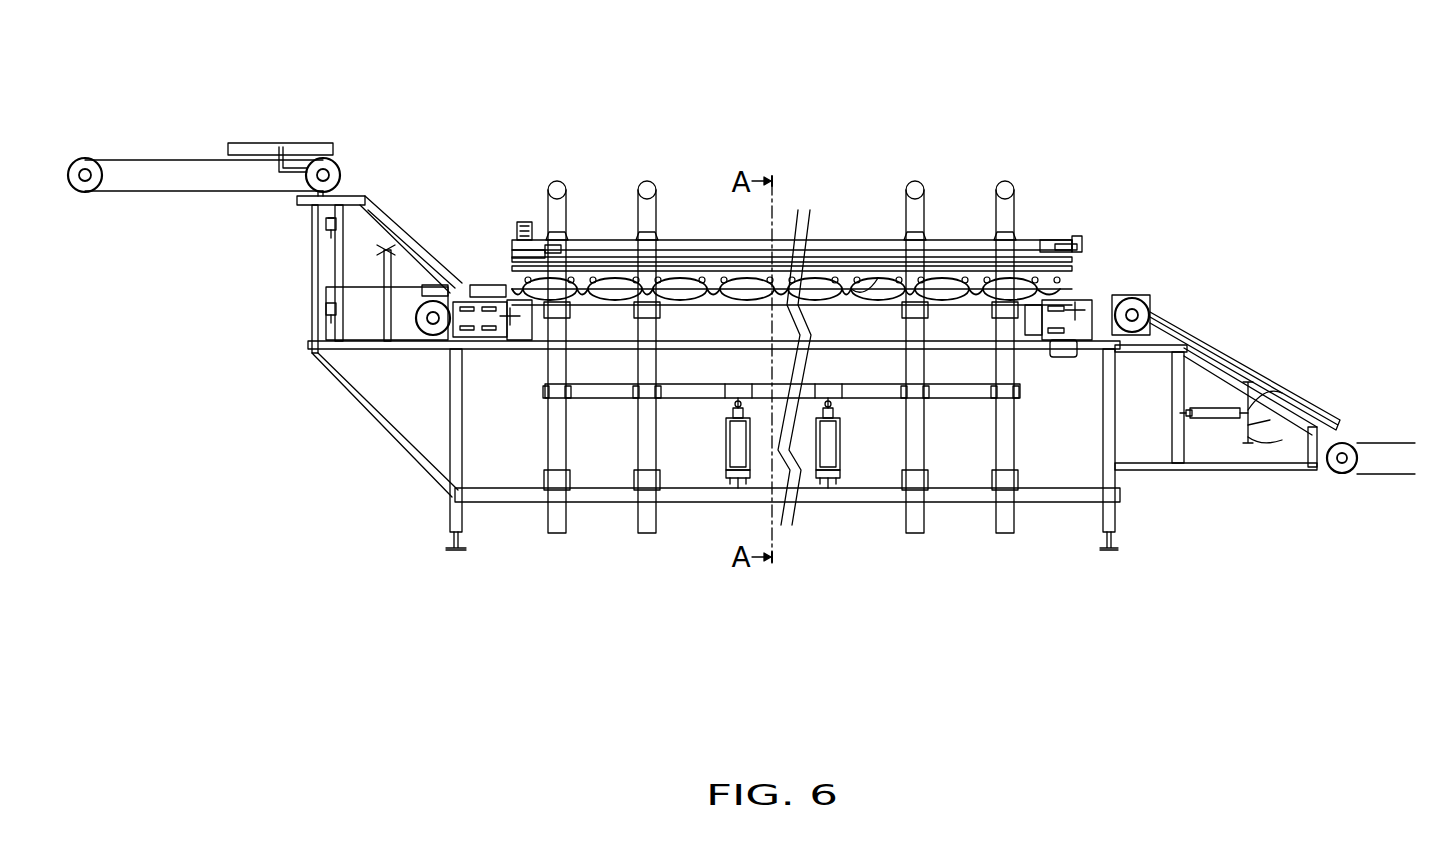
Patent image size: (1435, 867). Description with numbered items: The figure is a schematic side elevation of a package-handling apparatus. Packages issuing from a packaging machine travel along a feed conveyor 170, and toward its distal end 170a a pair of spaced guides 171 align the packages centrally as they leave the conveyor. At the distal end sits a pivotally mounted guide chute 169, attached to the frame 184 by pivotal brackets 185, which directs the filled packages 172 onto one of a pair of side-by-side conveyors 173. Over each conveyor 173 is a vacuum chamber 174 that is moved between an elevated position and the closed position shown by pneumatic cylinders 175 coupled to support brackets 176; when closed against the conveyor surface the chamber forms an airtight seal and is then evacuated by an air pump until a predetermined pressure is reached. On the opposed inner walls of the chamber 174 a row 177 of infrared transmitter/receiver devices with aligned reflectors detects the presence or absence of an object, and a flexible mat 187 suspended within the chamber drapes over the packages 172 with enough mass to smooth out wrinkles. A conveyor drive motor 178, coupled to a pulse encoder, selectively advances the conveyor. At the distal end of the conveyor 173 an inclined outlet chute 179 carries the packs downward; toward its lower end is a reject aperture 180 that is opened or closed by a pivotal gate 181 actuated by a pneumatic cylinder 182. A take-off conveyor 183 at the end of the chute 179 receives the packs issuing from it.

The guide chute 169 is at (405, 205).
The feed conveyor 170 is at (178, 160).
The distal end 170a is at (336, 166).
The spaced guides 171 is at (297, 143).
The packages 172 is at (482, 290).
The conveyors 173 is at (428, 328).
The vacuum chamber 174 is at (615, 240).
The pneumatic cylinders 175 is at (734, 445).
The support brackets 176 is at (558, 181).
The row of infrared transmitter/receiver devices 177 is at (712, 277).
The conveyor drive motor 178 is at (1068, 357).
The inclined outlet chute 179 is at (1185, 330).
The reject aperture 180 is at (1265, 405).
The pivotal gate 181 is at (1268, 442).
The pneumatic cylinder 182 is at (1220, 422).
The take-off conveyor 183 is at (1358, 476).
The frame 184 is at (313, 365).
The pivotal brackets 185 is at (326, 308).
The flexible mat 187 is at (858, 280).